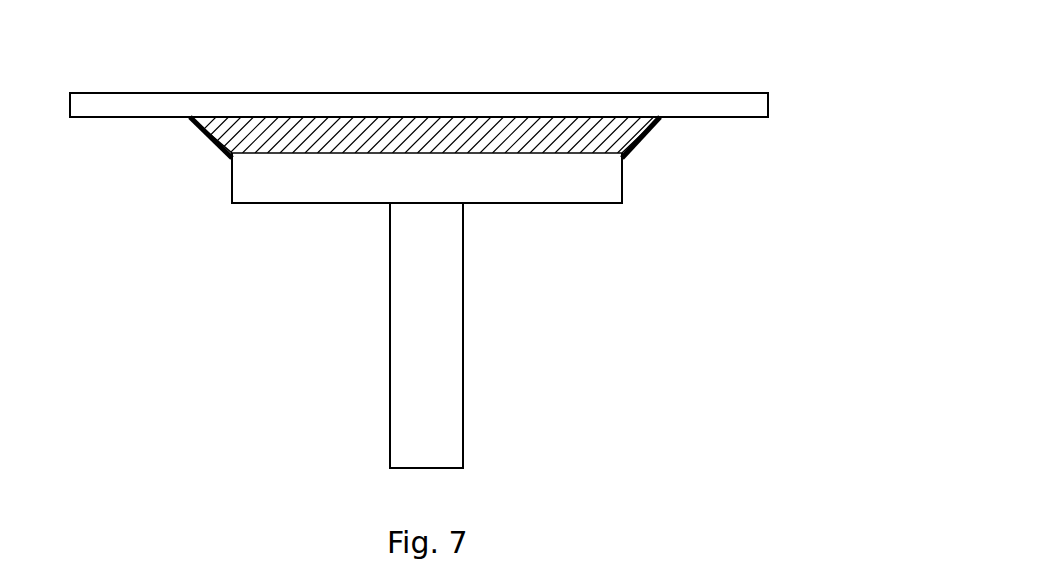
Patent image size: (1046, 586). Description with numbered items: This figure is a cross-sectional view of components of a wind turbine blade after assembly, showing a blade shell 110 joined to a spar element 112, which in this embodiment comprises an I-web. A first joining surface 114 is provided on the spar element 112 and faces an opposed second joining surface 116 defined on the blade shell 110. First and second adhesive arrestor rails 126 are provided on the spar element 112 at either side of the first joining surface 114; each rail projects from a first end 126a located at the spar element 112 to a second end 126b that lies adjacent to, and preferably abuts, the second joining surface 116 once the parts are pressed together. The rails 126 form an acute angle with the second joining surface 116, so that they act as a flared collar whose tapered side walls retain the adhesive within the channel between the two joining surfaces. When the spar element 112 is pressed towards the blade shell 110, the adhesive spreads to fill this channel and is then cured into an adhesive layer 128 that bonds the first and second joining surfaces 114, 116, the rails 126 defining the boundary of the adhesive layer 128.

The blade shell 110 is at (109, 105).
The spar element 112 is at (407, 297).
The first joining surface 114 is at (503, 150).
The second joining surface 116 is at (475, 116).
The adhesive arrestor rails 126 is at (213, 140).
The first end 126a is at (632, 167).
The second end 126b is at (682, 128).
The adhesive layer 128 is at (311, 117).